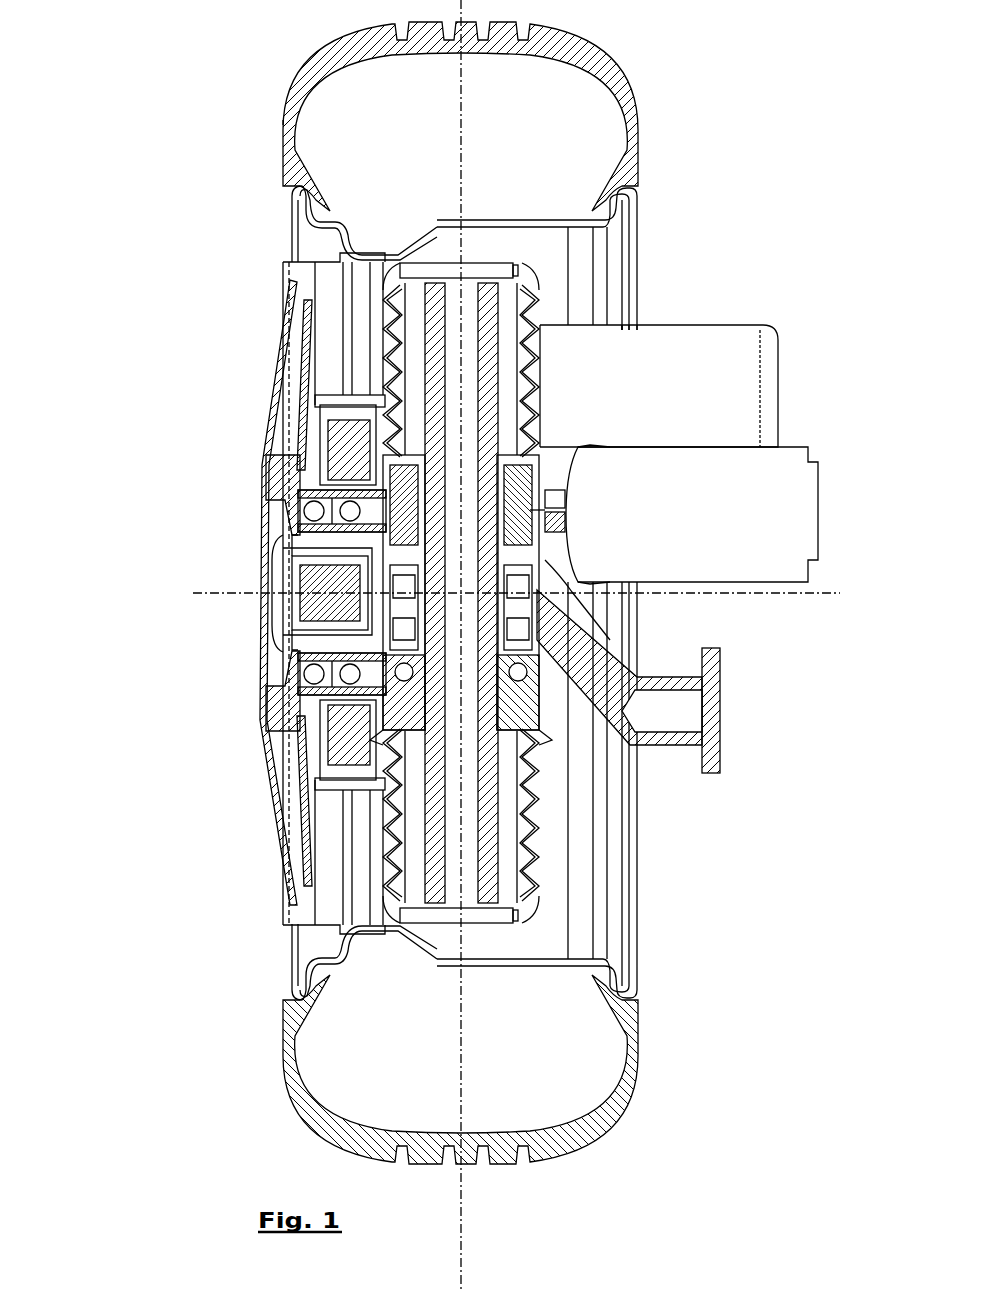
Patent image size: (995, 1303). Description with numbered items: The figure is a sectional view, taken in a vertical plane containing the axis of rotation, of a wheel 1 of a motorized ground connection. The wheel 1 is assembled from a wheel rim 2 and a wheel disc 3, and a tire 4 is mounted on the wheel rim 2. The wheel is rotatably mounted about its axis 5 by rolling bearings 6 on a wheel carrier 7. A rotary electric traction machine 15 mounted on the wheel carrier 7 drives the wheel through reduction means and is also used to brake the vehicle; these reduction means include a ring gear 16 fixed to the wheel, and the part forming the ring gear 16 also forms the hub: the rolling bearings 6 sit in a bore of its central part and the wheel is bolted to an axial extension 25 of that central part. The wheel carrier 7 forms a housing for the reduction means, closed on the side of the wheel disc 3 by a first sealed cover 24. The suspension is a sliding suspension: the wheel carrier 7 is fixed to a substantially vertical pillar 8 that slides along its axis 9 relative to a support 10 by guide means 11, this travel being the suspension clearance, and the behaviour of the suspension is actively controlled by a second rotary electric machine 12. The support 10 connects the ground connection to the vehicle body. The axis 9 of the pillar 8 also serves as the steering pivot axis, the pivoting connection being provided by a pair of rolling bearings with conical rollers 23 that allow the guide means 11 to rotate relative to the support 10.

The wheel 1 is at (252, 100).
The wheel rim 2 is at (510, 222).
The wheel disc 3 is at (305, 305).
The tire 4 is at (598, 58).
The axis 5 is at (210, 592).
The rolling bearings 6 is at (317, 506).
The wheel carrier 7 is at (362, 642).
The pillar 8 is at (470, 290).
The axis of the pillar 9 is at (460, 1055).
The support 10 is at (672, 745).
The guide means 11 is at (500, 730).
The second rotary electric machine 12 is at (770, 465).
The rotary electric traction machine 15 is at (700, 345).
The ring gear 16 is at (320, 450).
The rolling bearings with conical rollers 23 is at (517, 625).
The first sealed cover 24 is at (320, 478).
The axial extension 25 is at (330, 725).